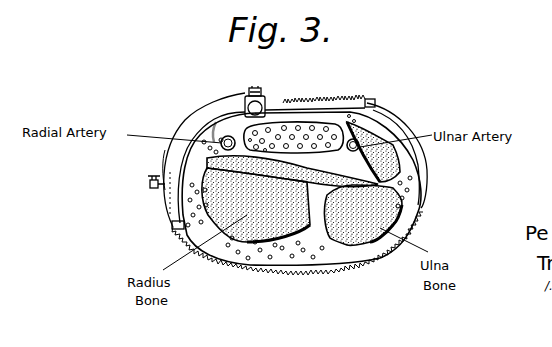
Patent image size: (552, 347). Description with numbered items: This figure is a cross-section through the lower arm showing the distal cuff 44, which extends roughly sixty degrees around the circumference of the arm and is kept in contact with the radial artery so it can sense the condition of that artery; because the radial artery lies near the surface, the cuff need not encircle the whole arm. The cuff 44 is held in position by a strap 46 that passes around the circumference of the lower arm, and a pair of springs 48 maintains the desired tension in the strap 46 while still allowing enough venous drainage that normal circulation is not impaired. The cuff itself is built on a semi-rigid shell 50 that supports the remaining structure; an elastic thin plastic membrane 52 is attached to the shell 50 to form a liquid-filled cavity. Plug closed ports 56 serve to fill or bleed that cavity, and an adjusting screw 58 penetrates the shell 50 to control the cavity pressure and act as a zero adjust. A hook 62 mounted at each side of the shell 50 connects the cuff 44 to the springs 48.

The distal cuff 44 is at (181, 116).
The strap 46 is at (400, 122).
The springs 48 is at (337, 102).
The semi-rigid shell 50 is at (168, 167).
The elastic thin plastic membrane 52 is at (218, 140).
The plug closed ports 56 is at (258, 93).
The adjusting screw 58 is at (235, 102).
The hook 62 is at (370, 104).